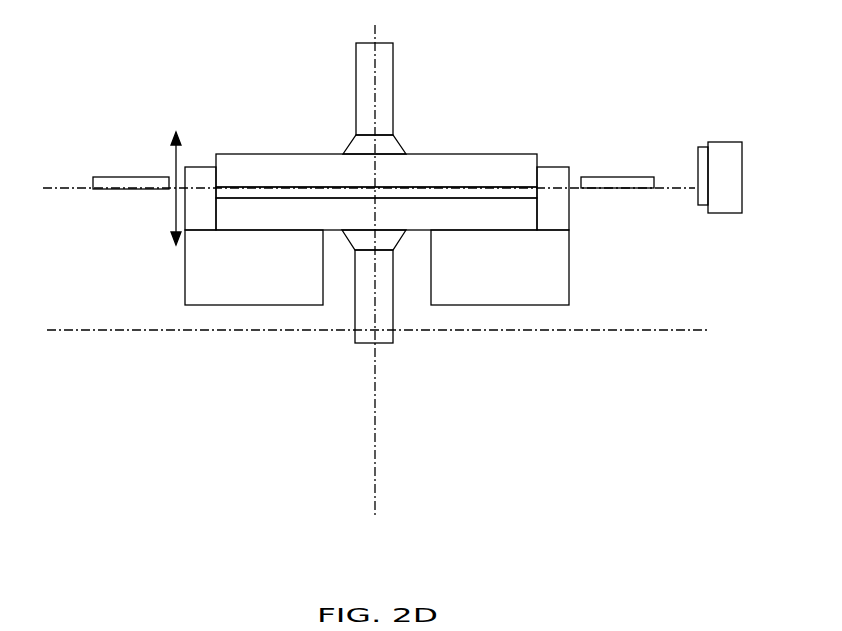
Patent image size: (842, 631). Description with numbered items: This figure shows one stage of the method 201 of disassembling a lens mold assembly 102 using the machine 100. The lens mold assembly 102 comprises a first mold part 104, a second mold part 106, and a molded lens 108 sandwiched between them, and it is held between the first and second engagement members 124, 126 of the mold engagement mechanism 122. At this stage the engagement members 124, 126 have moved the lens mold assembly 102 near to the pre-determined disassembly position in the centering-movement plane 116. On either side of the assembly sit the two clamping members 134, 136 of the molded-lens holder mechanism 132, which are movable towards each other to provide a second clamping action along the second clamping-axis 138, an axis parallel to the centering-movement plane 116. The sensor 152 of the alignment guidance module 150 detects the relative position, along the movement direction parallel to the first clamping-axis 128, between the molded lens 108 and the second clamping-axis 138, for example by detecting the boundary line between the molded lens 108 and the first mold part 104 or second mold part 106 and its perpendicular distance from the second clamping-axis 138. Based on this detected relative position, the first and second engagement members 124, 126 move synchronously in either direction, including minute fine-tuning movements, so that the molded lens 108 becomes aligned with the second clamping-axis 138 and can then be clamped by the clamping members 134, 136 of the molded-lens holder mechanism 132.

The machine 100 is at (502, 60).
The lens mold assembly 102 is at (703, 218).
The first mold part 104 is at (533, 177).
The second mold part 106 is at (533, 210).
The molded lens 108 is at (533, 192).
The centering-movement plane 116 is at (677, 331).
The mold engagement mechanism 122 is at (326, 193).
The first engagement member 124 is at (363, 140).
The second engagement member 126 is at (352, 240).
The first clamping-axis 128 is at (375, 518).
The molded-lens holder mechanism 132 is at (373, 127).
The clamping member 134 is at (147, 178).
The clamping member 136 is at (602, 177).
The second clamping-axis 138 is at (673, 187).
The alignment guidance module 150 is at (713, 122).
The sensor 152 is at (725, 142).
The method of disassembling the lens mold assembly 201 is at (198, 65).